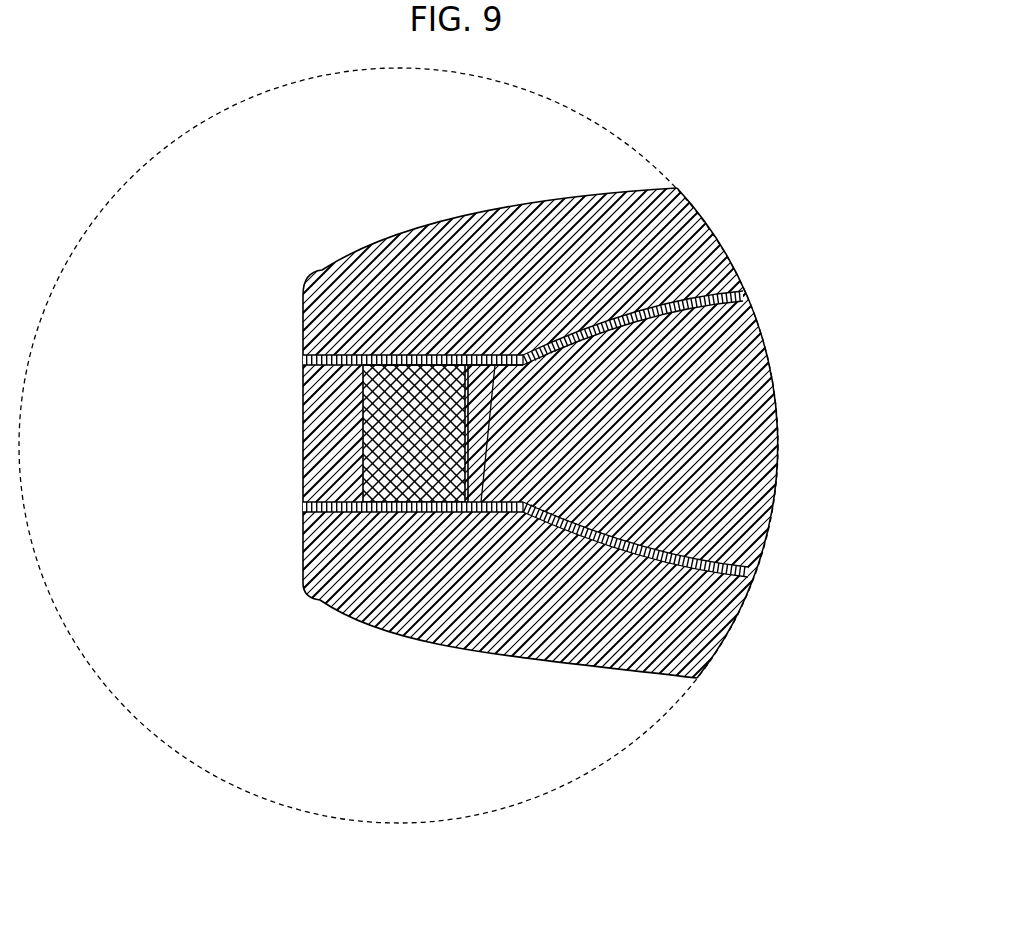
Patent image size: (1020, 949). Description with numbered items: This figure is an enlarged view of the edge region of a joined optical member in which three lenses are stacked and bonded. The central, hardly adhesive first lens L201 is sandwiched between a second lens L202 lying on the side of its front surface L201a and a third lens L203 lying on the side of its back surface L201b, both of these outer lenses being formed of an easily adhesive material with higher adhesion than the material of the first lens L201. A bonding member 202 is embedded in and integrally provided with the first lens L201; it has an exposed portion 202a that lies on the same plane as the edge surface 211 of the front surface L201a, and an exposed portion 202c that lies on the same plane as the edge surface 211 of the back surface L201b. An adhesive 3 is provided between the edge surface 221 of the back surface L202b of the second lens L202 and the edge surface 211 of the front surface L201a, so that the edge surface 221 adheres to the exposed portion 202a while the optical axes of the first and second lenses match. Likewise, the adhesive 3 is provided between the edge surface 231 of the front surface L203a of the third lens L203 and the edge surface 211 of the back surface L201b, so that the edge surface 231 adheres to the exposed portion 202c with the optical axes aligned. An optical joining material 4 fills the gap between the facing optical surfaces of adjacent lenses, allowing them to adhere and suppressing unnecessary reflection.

The adhesive 3 is at (307, 358).
The optical joining material 4 is at (746, 295).
The bonding member 202 is at (363, 430).
The exposed portion 202a is at (377, 350).
The exposed portion 202c is at (377, 530).
The edge surface 211 is at (528, 422).
The edge surface 221 is at (447, 554).
The edge surface 231 is at (443, 232).
The first lens L201 is at (777, 428).
The second lens L202 is at (708, 228).
The third lens L203 is at (728, 633).
The front surface L201a is at (517, 247).
The back surface L201b is at (538, 623).
The back surface L202b is at (482, 503).
The front surface L203a is at (447, 365).